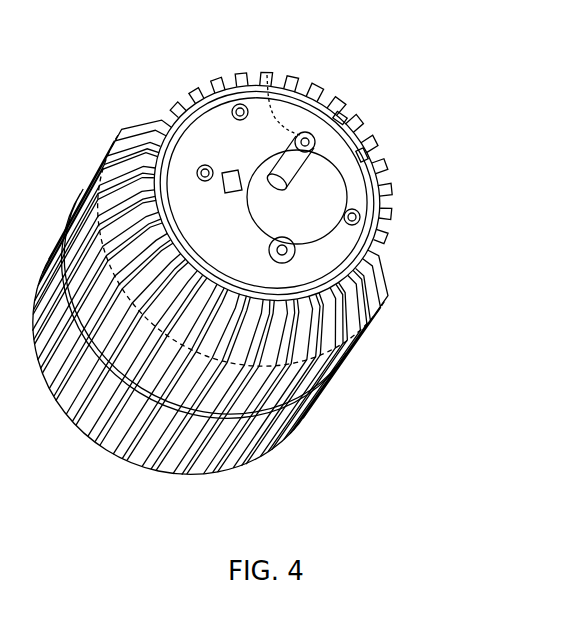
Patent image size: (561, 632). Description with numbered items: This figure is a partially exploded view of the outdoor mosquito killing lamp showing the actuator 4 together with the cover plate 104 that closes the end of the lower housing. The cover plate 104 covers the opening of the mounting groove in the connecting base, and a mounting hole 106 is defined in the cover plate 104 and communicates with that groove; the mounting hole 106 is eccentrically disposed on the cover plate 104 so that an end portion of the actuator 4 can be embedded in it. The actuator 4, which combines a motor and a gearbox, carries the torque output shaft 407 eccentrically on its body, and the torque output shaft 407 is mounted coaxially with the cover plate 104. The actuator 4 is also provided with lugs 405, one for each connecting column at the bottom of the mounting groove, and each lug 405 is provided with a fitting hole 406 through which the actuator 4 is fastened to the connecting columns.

The actuator 4 is at (323, 203).
The cover plate 104 is at (217, 137).
The mounting hole 106 is at (320, 242).
The lug 405 is at (268, 108).
The fitting hole 406 is at (304, 140).
The torque output shaft 407 is at (334, 135).